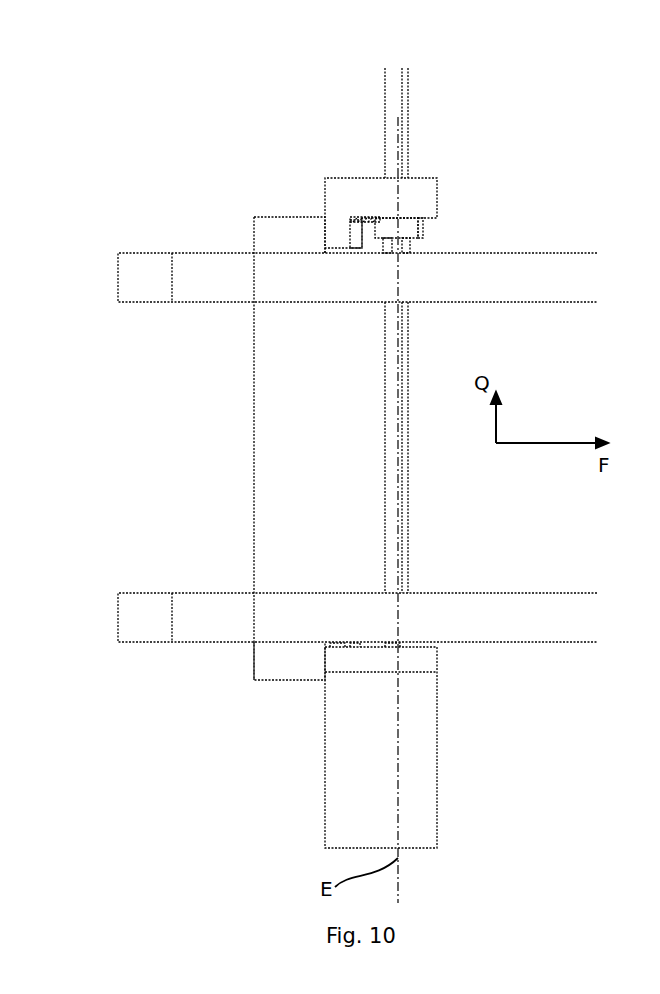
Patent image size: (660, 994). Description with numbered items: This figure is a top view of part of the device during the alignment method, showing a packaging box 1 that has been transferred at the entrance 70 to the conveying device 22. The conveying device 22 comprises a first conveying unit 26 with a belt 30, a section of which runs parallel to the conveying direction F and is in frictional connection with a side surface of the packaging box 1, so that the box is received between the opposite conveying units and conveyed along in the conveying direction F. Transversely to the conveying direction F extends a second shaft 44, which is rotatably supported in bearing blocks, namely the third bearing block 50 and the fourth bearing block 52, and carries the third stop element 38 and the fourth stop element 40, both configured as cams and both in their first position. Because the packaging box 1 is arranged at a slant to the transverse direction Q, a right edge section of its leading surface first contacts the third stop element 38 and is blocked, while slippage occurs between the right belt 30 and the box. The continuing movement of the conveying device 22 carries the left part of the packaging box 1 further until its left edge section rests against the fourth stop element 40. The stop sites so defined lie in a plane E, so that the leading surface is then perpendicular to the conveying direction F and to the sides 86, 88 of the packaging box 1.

The packaging box 1 is at (284, 496).
The conveying device 22 is at (595, 130).
The first conveying unit 26 is at (527, 236).
The belt 30 is at (575, 270).
The third stop element 38 is at (400, 643).
The fourth stop element 40 is at (410, 226).
The second shaft 44 is at (395, 101).
The third bearing block 50 is at (340, 738).
The housing 52 is at (341, 191).
The entrance 70 is at (101, 628).
The side 86 is at (270, 214).
The side 88 is at (265, 682).